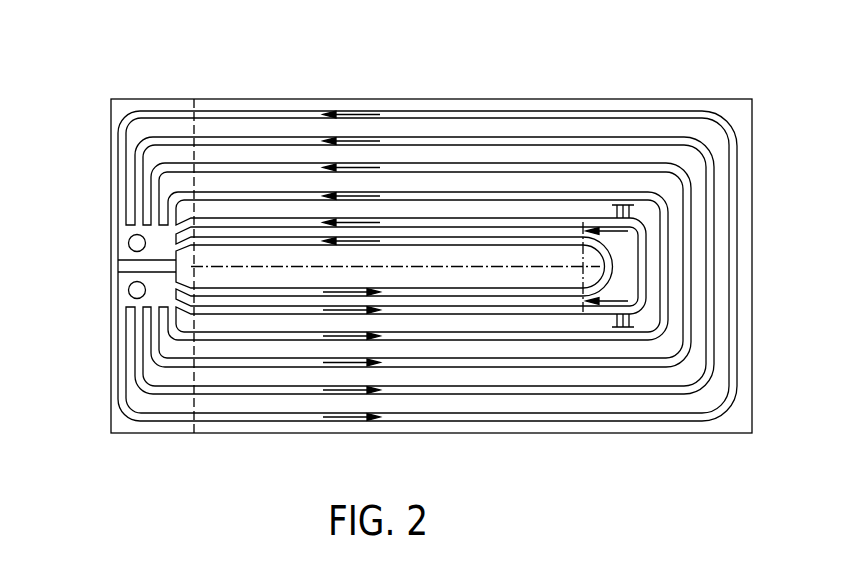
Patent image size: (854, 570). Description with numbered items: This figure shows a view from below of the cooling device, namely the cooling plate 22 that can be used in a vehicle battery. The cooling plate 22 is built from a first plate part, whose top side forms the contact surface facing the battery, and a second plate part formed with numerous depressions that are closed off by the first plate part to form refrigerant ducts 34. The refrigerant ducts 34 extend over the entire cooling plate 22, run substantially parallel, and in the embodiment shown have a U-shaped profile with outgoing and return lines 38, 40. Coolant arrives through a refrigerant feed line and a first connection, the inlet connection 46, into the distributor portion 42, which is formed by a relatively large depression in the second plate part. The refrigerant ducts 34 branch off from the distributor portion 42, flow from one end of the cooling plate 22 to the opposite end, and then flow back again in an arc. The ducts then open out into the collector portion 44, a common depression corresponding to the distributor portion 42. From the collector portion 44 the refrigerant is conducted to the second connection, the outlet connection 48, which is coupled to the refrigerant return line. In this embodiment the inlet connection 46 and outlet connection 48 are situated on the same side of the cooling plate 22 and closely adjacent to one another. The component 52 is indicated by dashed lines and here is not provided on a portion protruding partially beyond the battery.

The cooling plate 22 is at (616, 92).
The component 52 is at (137, 103).
The return line 40 is at (478, 115).
The outgoing line 38 is at (497, 418).
The refrigerant duct 34 is at (275, 418).
The collector portion 44 is at (126, 231).
The distributor portion 42 is at (158, 297).
The outlet connection 48 is at (132, 245).
The inlet connection 46 is at (130, 288).